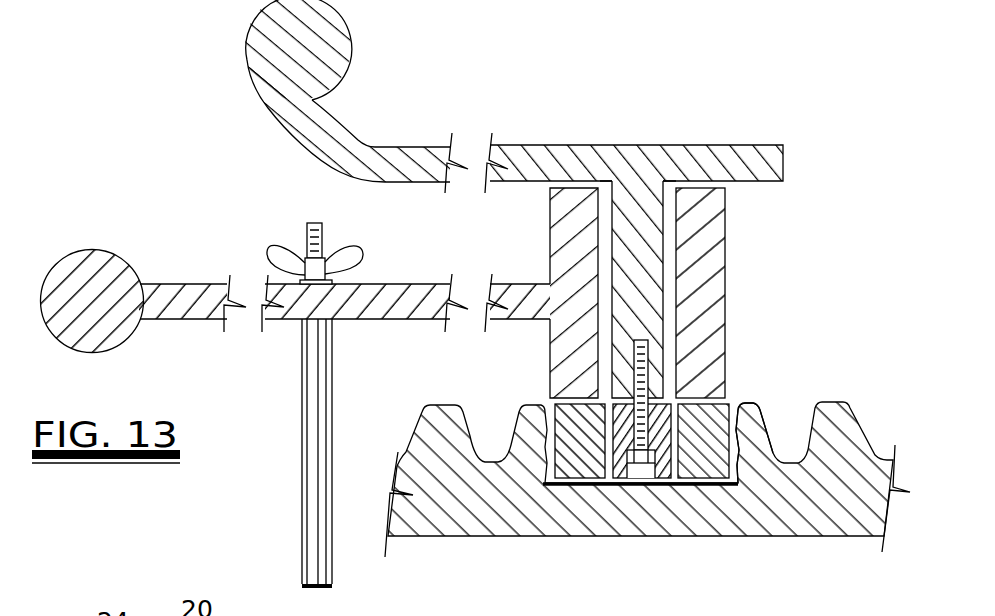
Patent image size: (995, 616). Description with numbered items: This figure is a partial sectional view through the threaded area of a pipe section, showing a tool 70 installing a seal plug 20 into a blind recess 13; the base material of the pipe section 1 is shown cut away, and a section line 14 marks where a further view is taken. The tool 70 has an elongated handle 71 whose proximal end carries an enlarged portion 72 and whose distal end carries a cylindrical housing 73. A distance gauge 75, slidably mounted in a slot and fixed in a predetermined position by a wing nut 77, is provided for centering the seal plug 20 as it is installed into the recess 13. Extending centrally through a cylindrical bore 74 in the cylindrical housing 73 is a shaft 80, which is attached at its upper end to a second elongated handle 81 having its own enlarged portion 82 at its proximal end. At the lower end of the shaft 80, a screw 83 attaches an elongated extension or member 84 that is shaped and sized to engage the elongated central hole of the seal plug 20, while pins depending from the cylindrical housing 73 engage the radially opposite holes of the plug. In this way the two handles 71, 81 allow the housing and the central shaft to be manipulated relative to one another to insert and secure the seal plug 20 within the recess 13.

The base 1 is at (470, 517).
The recess 13 is at (563, 480).
The section line 14 is at (635, 115).
The seal plug 20 is at (700, 433).
The tool 70 is at (765, 281).
The elongated handle 71 is at (295, 316).
The enlarged portion 72 is at (122, 277).
The cylindrical housing 73 is at (705, 350).
The cylindrical bore 74 is at (672, 214).
The distance gauge 75 is at (317, 485).
The wing nut 77 is at (347, 253).
The shaft 80 is at (645, 295).
The elongated handle 81 is at (355, 157).
The enlarged portion 82 is at (288, 50).
The screw 83 is at (645, 463).
The elongated extension or member 84 is at (665, 470).